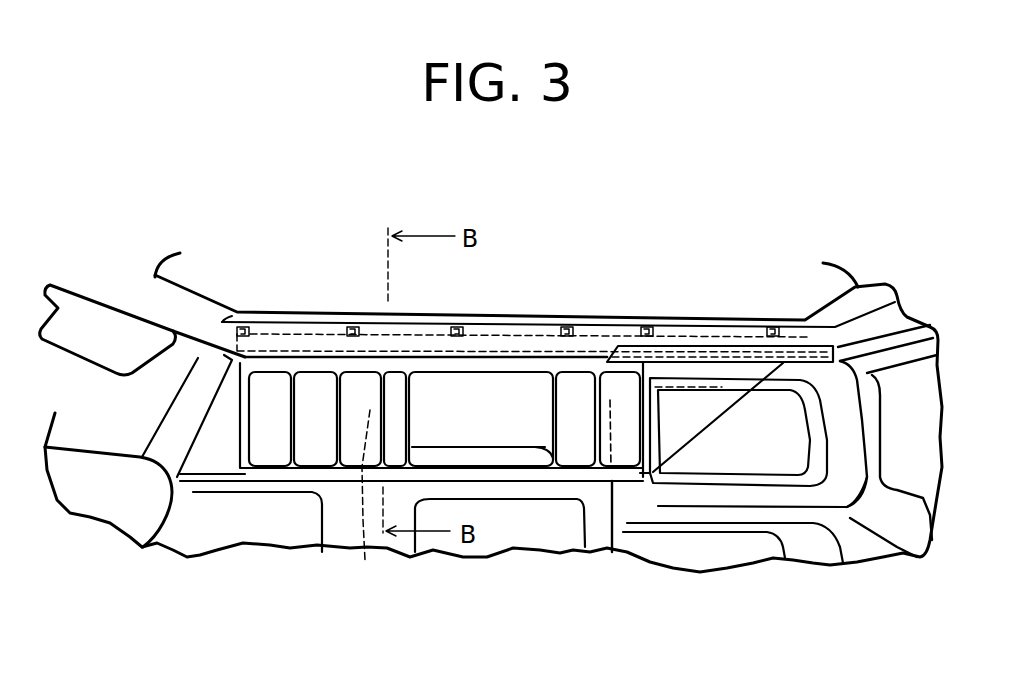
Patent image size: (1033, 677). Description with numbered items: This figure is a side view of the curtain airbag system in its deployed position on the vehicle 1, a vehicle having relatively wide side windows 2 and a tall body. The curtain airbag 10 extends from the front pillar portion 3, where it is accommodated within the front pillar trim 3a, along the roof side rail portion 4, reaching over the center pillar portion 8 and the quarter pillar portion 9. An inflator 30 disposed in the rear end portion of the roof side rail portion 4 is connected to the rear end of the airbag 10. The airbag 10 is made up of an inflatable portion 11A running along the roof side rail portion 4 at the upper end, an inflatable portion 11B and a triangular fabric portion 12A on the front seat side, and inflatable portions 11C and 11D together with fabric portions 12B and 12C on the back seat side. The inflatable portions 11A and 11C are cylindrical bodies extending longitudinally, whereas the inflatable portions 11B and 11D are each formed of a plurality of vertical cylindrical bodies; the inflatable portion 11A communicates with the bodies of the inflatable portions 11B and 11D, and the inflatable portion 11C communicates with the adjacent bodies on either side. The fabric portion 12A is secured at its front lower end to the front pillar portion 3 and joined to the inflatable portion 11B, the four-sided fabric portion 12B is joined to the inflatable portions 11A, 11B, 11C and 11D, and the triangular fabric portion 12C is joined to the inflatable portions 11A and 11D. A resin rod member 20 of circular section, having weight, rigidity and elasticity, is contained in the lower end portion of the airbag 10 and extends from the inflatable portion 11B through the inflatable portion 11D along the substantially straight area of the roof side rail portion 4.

The vehicle 1 is at (192, 289).
The side window 2 is at (278, 383).
The front pillar portion 3 is at (193, 388).
The front pillar trim 3a is at (170, 423).
The roof side rail portion 4 is at (510, 330).
The center pillar portion 8 is at (372, 400).
The quarter pillar portion 9 is at (610, 392).
The curtain airbag 10 is at (527, 387).
The inflatable portion 11A is at (679, 368).
The inflatable portion 11B is at (311, 438).
The inflatable portion 11C is at (493, 458).
The inflatable portion 11D is at (577, 442).
The fabric portion 12A is at (212, 447).
The fabric portion 12B is at (527, 430).
The fabric portion 12C is at (702, 405).
The rod member 20 is at (365, 560).
The inflator 30 is at (805, 338).